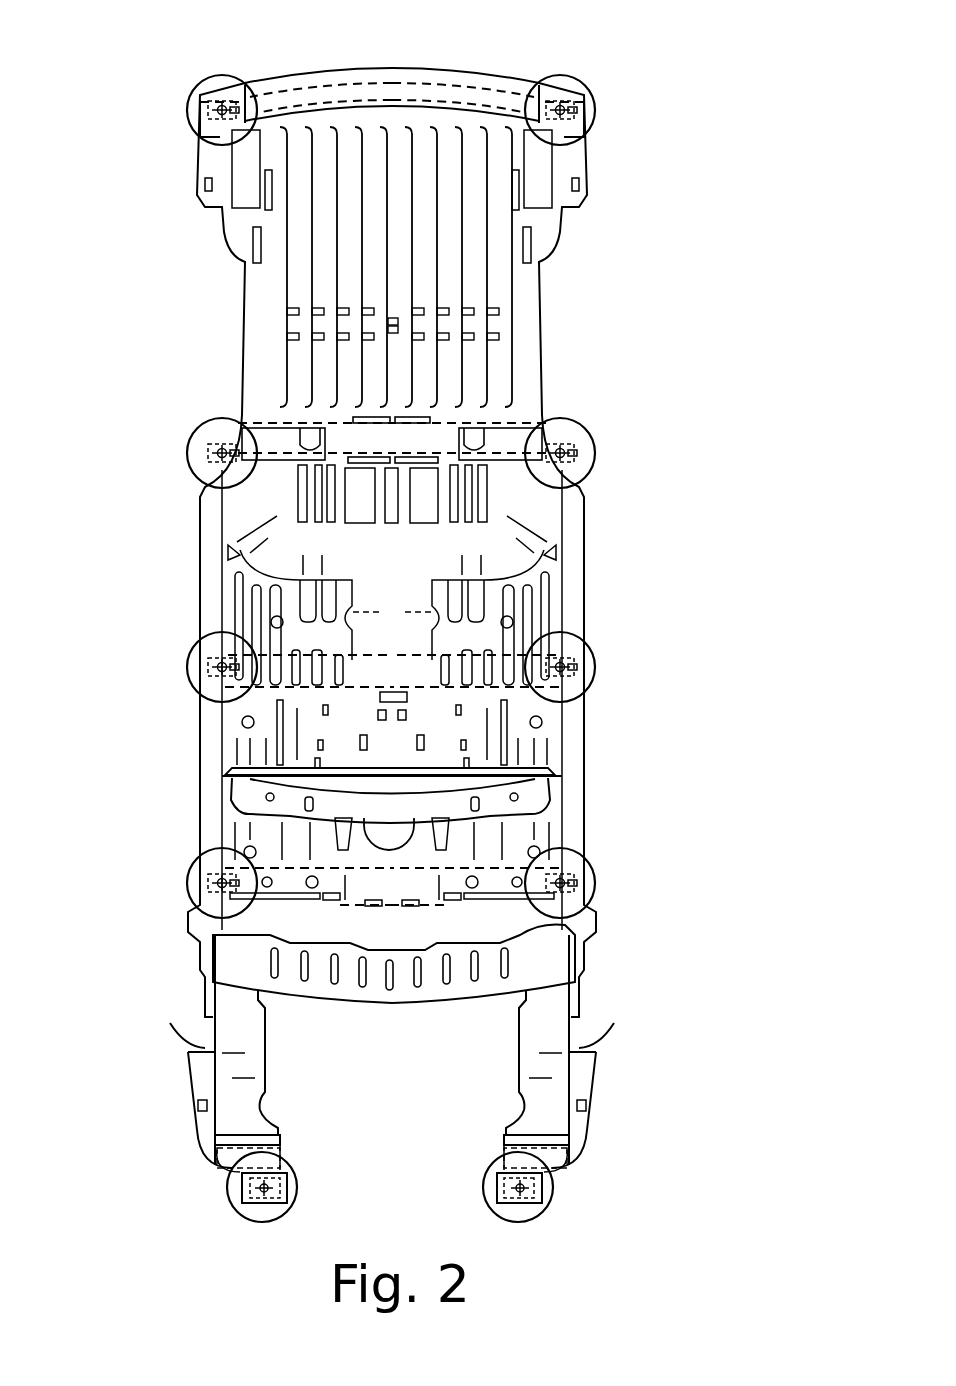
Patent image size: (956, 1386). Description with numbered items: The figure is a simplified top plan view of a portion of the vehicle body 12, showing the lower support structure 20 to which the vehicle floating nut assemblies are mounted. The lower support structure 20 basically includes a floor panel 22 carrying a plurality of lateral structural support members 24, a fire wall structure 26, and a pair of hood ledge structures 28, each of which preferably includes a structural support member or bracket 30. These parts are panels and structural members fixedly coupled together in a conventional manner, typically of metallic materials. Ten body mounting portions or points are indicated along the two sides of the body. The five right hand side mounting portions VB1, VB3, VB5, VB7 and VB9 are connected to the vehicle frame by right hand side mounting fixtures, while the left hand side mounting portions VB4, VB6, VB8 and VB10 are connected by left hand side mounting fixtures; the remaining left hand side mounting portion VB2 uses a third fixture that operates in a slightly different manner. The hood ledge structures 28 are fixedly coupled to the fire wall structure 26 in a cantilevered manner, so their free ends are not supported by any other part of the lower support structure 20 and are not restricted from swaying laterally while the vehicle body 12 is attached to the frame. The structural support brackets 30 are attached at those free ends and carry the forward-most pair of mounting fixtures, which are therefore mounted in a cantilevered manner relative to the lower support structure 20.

The vehicle body 12 is at (160, 272).
The lower support structure 20 is at (603, 561).
The floor panel 22 is at (500, 320).
The lateral structural support members 24 is at (500, 82).
The fire wall structure 26 is at (565, 923).
The hood ledge structures 28 is at (192, 1050).
The structural support bracket 30 is at (297, 1183).
The body mounting portion VB1 is at (190, 106).
The body mounting portion VB2 is at (594, 106).
The body mounting portion VB3 is at (192, 432).
The body mounting portion VB4 is at (596, 445).
The body mounting portion VB5 is at (190, 658).
The body mounting portion VB6 is at (596, 668).
The body mounting portion VB7 is at (190, 875).
The body mounting portion VB8 is at (593, 866).
The body mounting portion VB9 is at (238, 1210).
The body mounting portion VB10 is at (548, 1210).